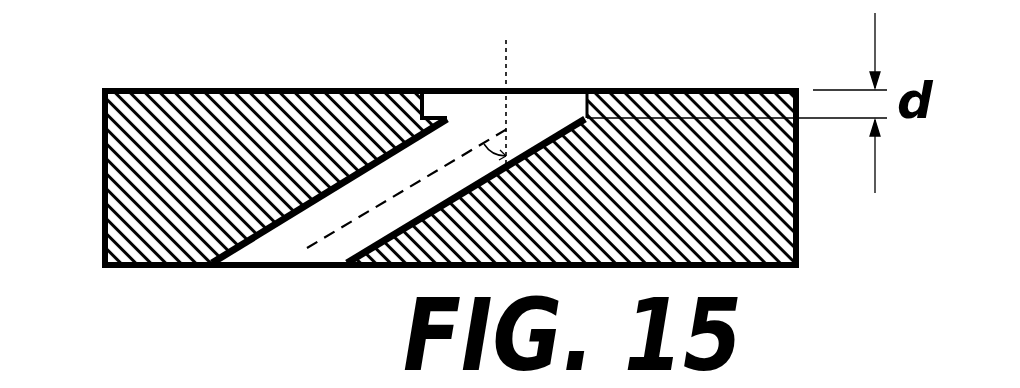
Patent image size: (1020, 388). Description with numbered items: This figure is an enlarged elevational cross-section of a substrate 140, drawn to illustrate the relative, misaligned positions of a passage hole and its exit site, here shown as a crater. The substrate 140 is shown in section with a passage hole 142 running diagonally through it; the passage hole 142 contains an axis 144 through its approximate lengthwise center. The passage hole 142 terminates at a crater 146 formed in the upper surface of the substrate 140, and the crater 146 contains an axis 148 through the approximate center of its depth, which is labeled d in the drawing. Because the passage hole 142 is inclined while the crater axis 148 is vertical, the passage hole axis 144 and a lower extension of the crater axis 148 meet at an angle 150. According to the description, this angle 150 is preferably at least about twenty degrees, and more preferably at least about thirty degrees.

The substrate 140 is at (113, 168).
The passage hole 142 is at (322, 250).
The passage hole axis 144 is at (386, 200).
The crater 146 is at (573, 105).
The crater axis 148 is at (507, 63).
The angle 150 is at (493, 158).